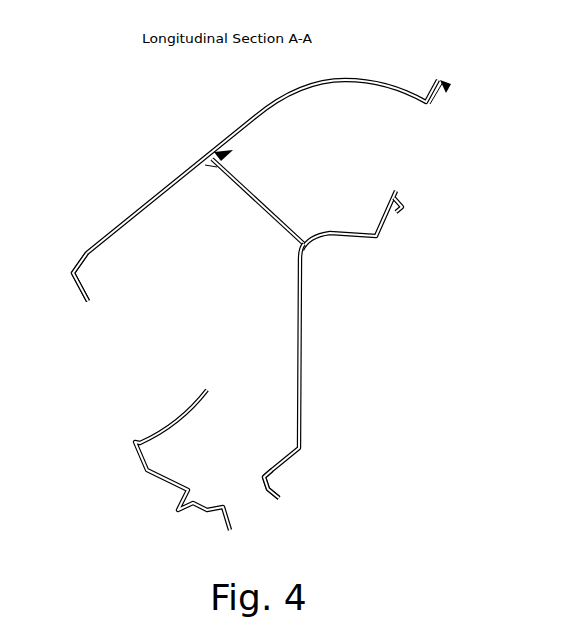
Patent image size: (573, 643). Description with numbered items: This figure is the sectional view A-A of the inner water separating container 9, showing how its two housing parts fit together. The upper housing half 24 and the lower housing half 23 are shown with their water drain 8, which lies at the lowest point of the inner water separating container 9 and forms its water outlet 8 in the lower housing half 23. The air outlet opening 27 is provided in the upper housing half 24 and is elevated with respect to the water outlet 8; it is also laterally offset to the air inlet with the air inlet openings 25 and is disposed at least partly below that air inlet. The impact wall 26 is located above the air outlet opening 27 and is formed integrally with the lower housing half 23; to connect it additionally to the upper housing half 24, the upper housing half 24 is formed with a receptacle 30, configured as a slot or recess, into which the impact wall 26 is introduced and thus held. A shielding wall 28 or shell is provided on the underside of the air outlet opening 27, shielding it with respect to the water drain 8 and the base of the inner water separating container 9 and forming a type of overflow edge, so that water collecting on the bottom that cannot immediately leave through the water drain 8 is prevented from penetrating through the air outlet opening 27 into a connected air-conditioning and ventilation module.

The water drain 8 is at (282, 487).
The inner water separating container 9 is at (198, 158).
The lower housing half 23 is at (305, 355).
The upper housing half 24 is at (140, 207).
The air inlet openings 25 is at (407, 192).
The impact wall 26 is at (267, 197).
The air outlet opening 27 is at (88, 303).
The shielding wall 28 is at (197, 420).
The receptacle 30 is at (212, 172).